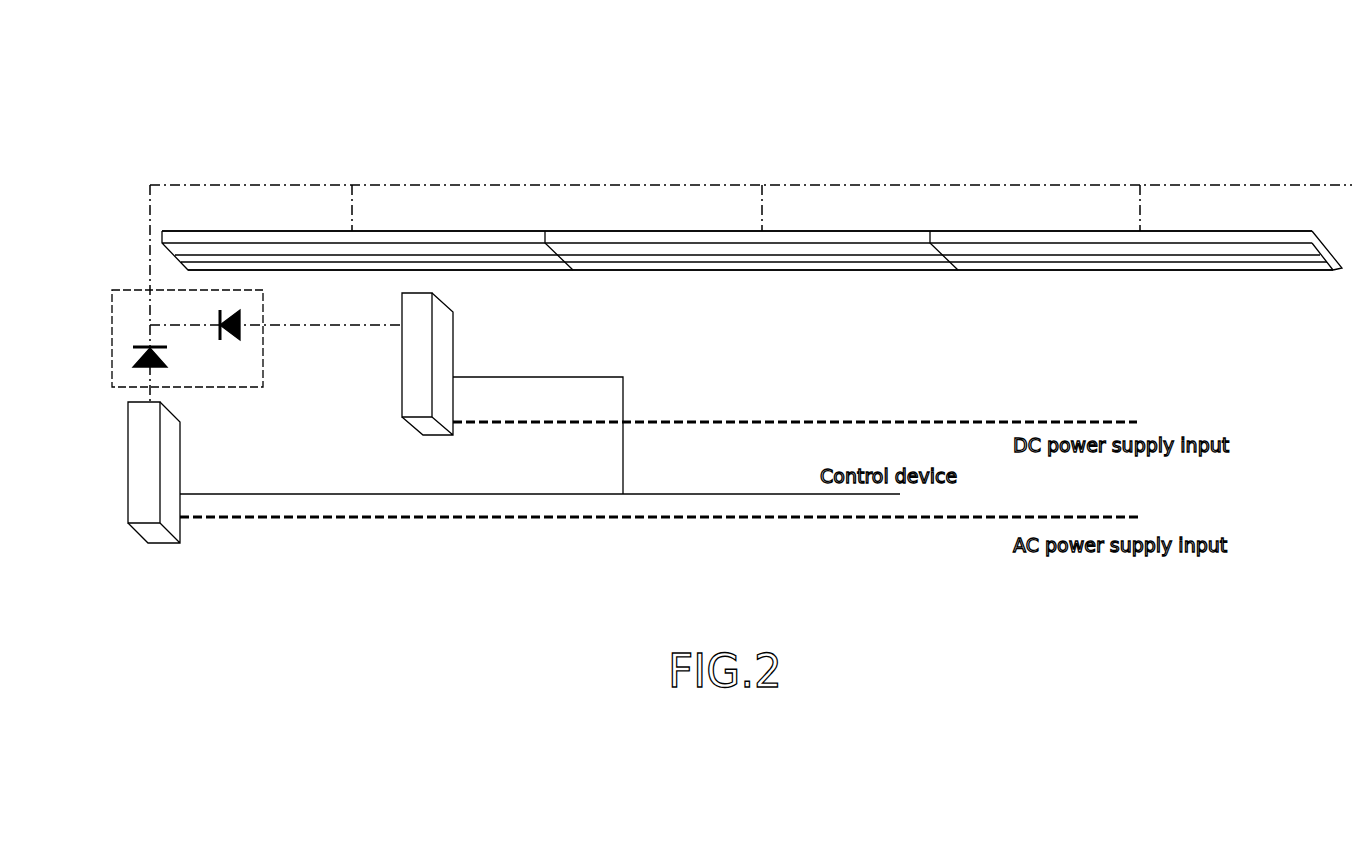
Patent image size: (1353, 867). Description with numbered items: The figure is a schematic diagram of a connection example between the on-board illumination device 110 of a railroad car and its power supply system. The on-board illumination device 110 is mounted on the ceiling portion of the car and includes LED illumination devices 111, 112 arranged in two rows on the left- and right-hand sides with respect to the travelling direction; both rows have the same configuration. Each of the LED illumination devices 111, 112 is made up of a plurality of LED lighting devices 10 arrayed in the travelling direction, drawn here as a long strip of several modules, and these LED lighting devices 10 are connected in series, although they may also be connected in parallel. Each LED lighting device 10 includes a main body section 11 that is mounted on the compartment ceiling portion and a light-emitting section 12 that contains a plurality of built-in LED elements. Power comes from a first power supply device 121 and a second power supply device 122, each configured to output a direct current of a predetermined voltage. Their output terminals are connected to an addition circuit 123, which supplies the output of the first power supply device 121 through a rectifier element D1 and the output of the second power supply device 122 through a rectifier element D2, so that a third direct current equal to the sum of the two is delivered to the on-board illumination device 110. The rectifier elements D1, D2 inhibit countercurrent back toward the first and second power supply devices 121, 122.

The LED lighting device 10 is at (1213, 231).
The main body section 11 is at (376, 231).
The light-emitting section 12 is at (415, 265).
The on-board illumination device 110 is at (1237, 107).
The LED illumination device 111 is at (752, 187).
The LED illumination device 112 is at (752, 187).
The first power supply device 121 is at (128, 468).
The second power supply device 122 is at (402, 380).
The addition circuit 123 is at (112, 302).
The rectifier element D1 is at (133, 358).
The rectifier element D2 is at (235, 340).